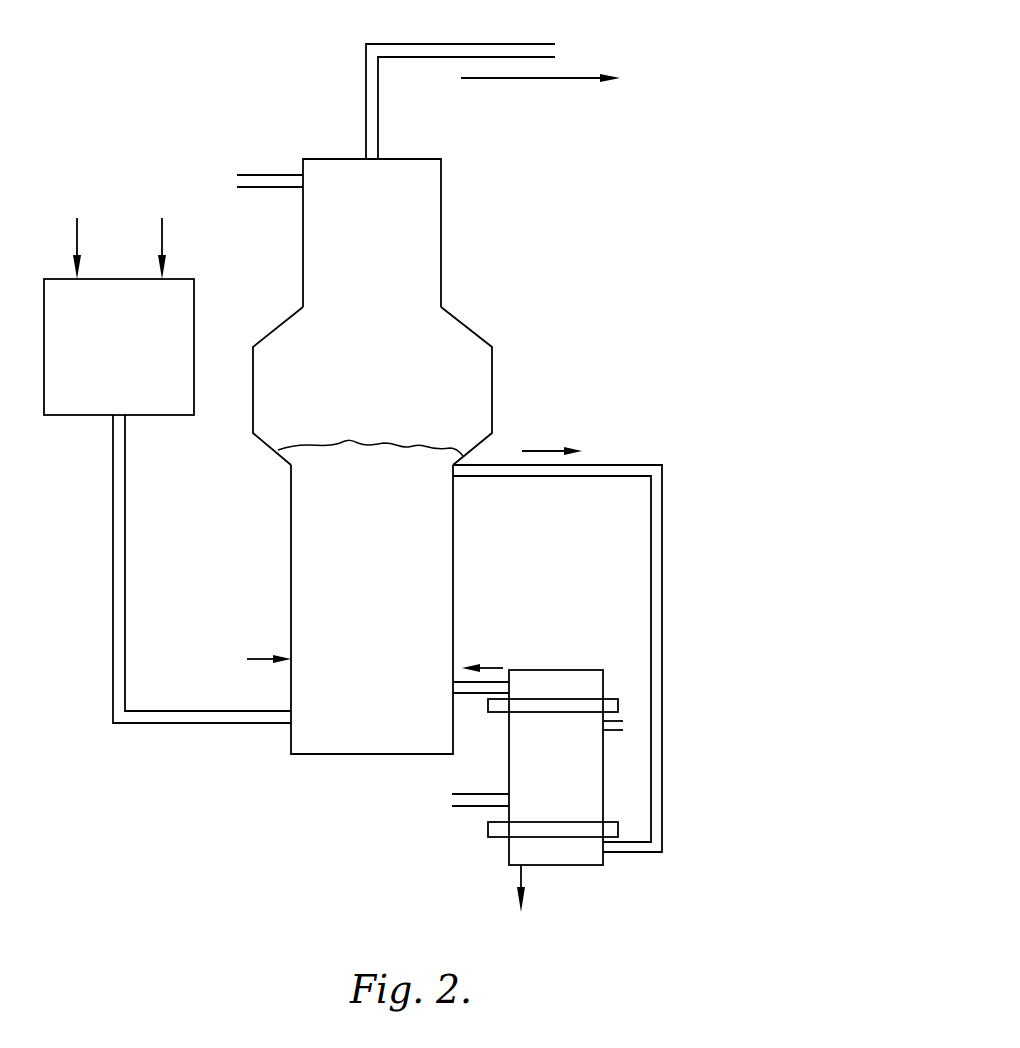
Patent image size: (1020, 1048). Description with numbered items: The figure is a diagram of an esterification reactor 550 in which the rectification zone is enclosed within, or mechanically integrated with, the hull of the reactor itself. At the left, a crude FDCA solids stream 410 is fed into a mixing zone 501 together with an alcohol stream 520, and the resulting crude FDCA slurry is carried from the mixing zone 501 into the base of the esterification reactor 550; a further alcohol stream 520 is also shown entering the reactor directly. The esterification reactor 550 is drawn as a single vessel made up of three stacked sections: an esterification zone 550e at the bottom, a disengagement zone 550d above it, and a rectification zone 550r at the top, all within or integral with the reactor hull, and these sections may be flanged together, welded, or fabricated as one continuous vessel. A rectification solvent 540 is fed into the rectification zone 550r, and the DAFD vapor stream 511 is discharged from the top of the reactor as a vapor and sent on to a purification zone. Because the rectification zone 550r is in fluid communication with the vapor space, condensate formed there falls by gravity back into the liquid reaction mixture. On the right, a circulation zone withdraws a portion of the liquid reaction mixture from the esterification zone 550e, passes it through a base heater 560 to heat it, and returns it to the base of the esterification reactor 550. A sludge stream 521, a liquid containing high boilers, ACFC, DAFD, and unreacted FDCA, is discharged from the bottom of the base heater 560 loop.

The DAFD vapor stream 511 is at (528, 83).
The rectification solvent 540 is at (258, 153).
The crude FDCA solids stream 410 is at (77, 211).
The alcohol stream 520 is at (211, 425).
The mixing zone 501 is at (167, 501).
The esterification reactor 550 is at (546, 270).
The rectification zone 550r is at (372, 233).
The disengagement zone 550d is at (372, 386).
The esterification zone 550e is at (372, 609).
The base heater 560 is at (638, 656).
The sludge stream 521 is at (406, 885).